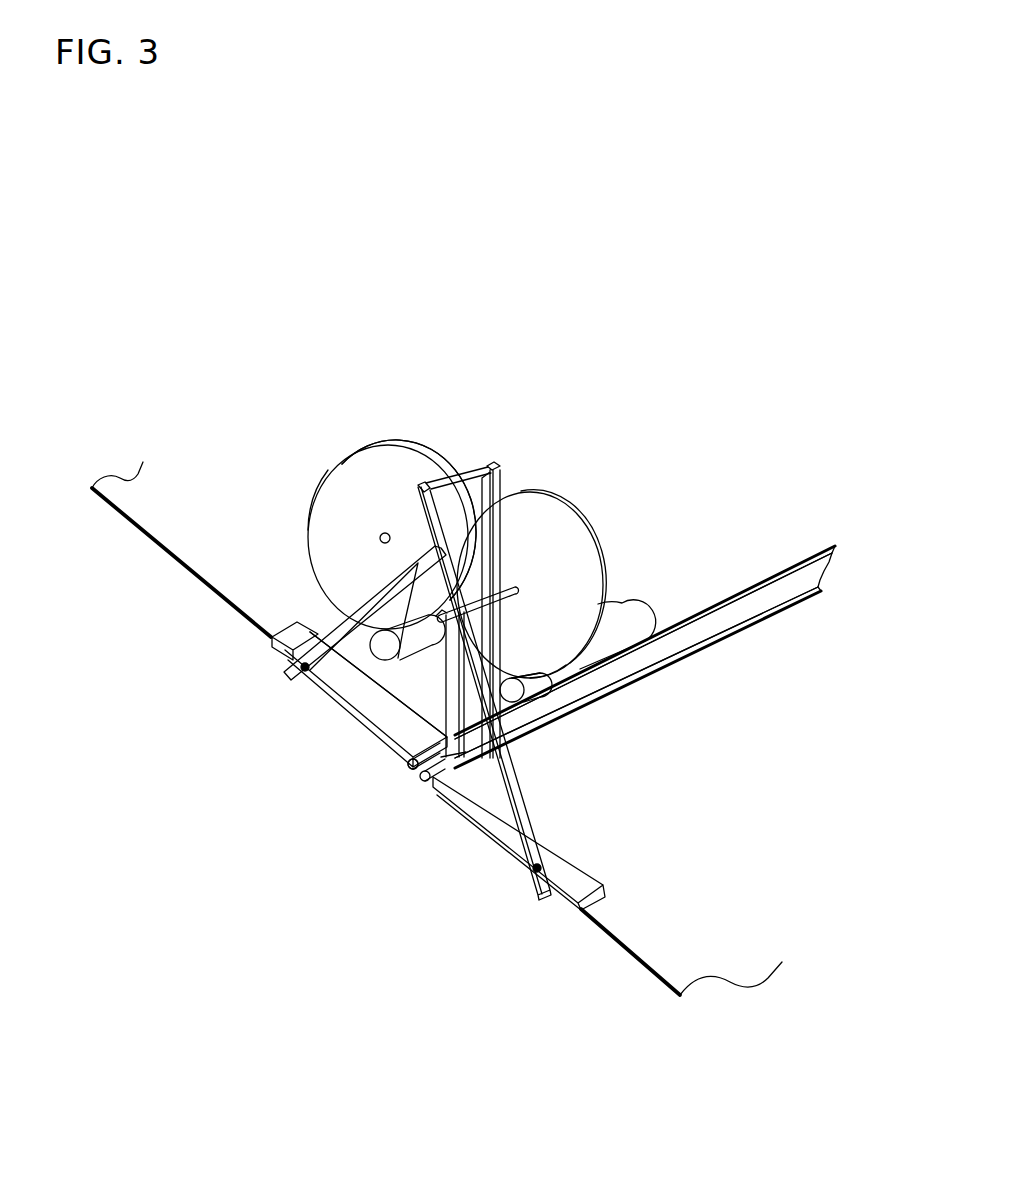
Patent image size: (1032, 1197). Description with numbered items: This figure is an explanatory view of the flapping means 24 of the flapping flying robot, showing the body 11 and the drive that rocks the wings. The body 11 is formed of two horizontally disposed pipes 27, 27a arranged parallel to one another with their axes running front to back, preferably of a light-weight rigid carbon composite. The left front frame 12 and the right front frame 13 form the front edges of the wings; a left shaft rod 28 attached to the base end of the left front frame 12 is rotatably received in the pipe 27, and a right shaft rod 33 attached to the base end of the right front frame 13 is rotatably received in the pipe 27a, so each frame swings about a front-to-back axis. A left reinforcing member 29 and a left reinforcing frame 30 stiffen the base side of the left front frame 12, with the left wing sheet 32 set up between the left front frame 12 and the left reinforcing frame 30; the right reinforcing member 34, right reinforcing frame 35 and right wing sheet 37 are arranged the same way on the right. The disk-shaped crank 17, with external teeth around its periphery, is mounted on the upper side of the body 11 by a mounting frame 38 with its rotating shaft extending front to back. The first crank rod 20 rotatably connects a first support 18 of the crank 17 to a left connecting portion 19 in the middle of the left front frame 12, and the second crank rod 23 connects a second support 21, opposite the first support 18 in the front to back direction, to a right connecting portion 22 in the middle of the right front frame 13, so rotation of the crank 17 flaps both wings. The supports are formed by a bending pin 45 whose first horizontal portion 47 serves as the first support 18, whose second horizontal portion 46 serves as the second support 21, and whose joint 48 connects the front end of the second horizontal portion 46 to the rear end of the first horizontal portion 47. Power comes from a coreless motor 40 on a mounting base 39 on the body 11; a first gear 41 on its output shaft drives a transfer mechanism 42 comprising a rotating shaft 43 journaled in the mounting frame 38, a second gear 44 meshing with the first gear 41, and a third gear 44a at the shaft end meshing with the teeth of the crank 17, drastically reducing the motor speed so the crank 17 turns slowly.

The body 11 is at (684, 677).
The left front frame 12 is at (193, 577).
The right front frame 13 is at (610, 943).
The crank 17 is at (362, 478).
The first support 18 is at (362, 700).
The left connecting portion 19 is at (297, 679).
The first crank rod 20 is at (320, 652).
The second support 21 is at (398, 470).
The right connecting portion 22 is at (540, 897).
The second crank rod 23 is at (520, 817).
The flapping means 24 is at (514, 378).
The pipe 27 is at (766, 590).
The pipe 27a is at (793, 585).
The left shaft rod 28 is at (413, 765).
The left reinforcing member 29 is at (357, 697).
The left reinforcing frame 30 is at (721, 612).
The left wing sheet 32 is at (168, 487).
The right shaft rod 33 is at (425, 783).
The right reinforcing member 34 is at (493, 813).
The right reinforcing frame 35 is at (745, 627).
The right wing sheet 37 is at (712, 918).
The mounting frame 38 is at (469, 461).
The mounting base 39 is at (590, 697).
The coreless motor 40 is at (607, 640).
The first gear 41 is at (557, 727).
The transfer mechanism 42 is at (585, 500).
The rotating shaft 43 is at (497, 595).
The second gear 44 is at (517, 527).
The third gear 44a is at (407, 772).
The bending pin 45 is at (389, 550).
The second horizontal portion 46 is at (437, 493).
The first horizontal portion 47 is at (373, 587).
The joint 48 is at (310, 472).